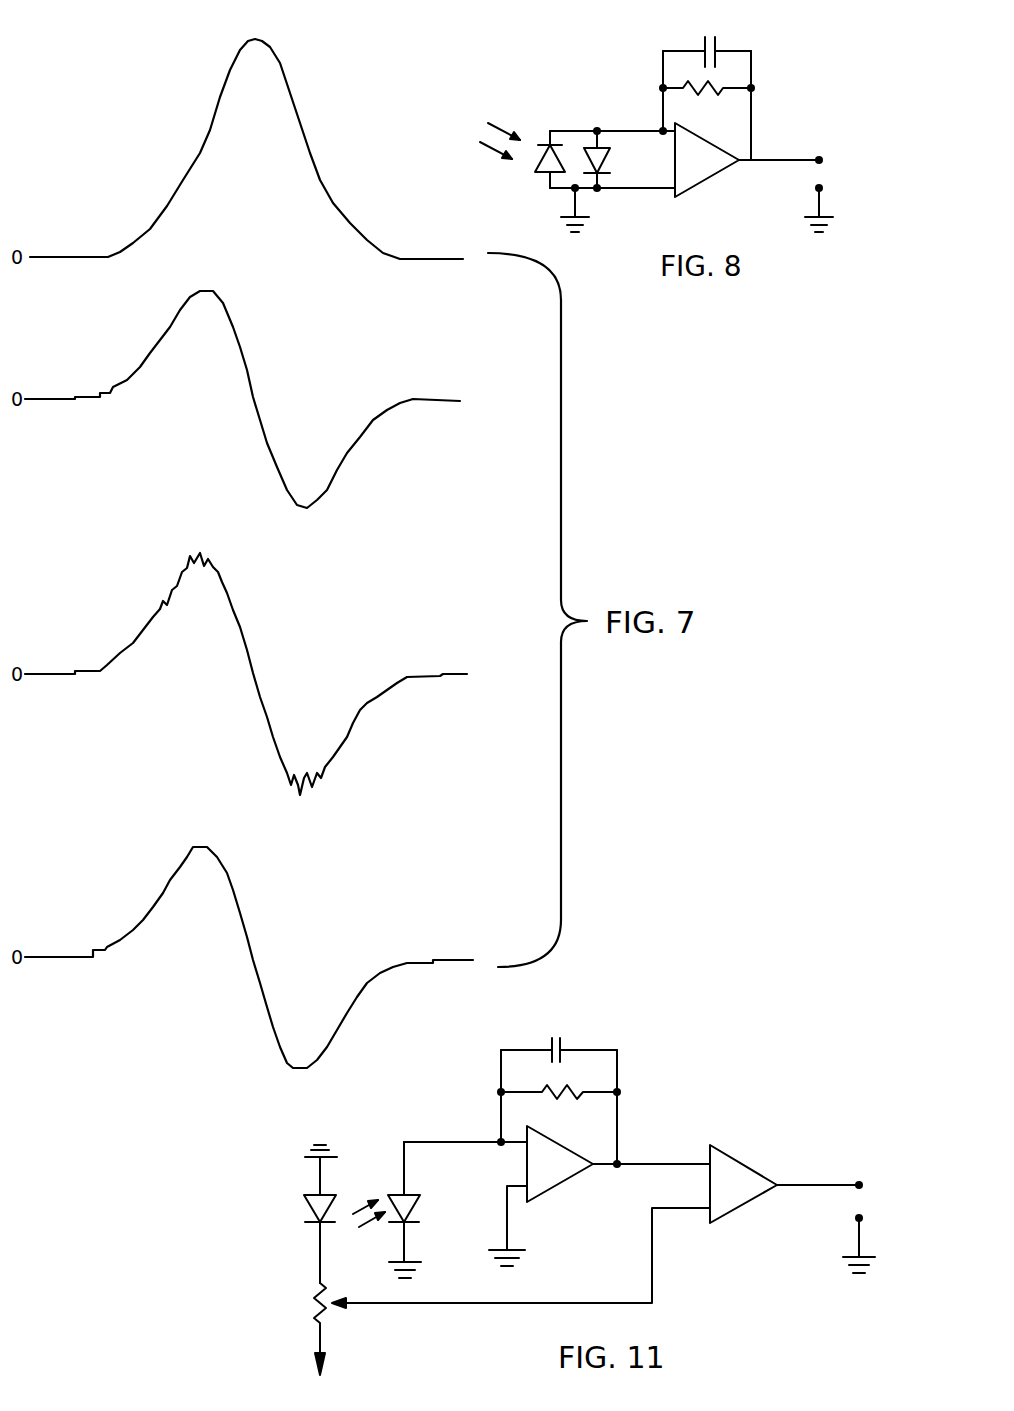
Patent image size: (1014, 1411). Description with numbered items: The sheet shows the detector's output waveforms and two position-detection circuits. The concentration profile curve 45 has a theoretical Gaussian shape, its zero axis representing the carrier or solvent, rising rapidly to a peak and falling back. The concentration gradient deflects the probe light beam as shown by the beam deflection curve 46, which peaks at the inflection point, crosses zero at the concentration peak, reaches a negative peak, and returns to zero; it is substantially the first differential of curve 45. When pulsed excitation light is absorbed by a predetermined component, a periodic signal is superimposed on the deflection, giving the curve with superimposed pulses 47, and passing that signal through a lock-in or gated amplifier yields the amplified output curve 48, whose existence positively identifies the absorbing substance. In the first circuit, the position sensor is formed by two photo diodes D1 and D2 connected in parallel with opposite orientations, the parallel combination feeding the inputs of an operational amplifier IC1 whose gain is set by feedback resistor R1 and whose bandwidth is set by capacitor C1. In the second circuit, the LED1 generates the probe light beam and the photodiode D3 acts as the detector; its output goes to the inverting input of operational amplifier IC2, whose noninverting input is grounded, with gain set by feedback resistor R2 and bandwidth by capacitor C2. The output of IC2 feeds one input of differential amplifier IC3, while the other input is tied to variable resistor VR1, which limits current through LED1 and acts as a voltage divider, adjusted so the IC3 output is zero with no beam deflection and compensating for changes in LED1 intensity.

In FIG. 7, the concentration profile curve 45 is at (197, 170).
In FIG. 7, the beam deflection curve 46 is at (158, 345).
In FIG. 7, the curve with superimposed pulses 47 is at (160, 608).
In FIG. 7, the amplified output curve 48 is at (155, 908).
In FIG. 8, the capacitor C1 is at (707, 40).
In FIG. 8, the feedback resistor R1 is at (707, 99).
In FIG. 8, the photo diode D1 is at (536, 166).
In FIG. 8, the photo diode D2 is at (611, 163).
In FIG. 8, the operational amplifier IC1 is at (707, 160).
In FIG. 11, the capacitor C2 is at (559, 1039).
In FIG. 11, the feedback resistor R2 is at (559, 1103).
In FIG. 11, the operational amplifier IC2 is at (560, 1164).
In FIG. 11, the differential amplifier IC3 is at (743, 1184).
In FIG. 11, the photodiode D3 is at (421, 1211).
In FIG. 11, the LED LED1 is at (304, 1212).
In FIG. 11, the variable resistor VR1 is at (296, 1329).